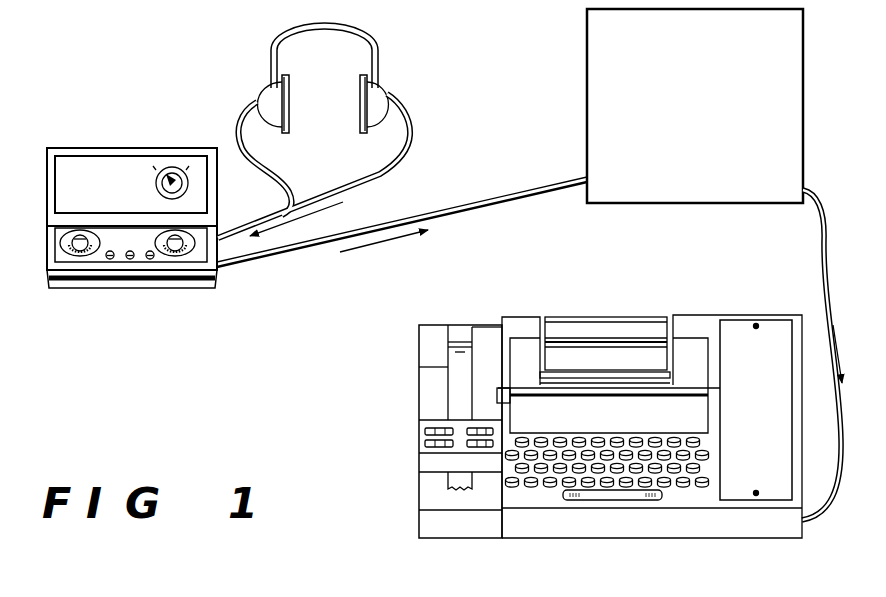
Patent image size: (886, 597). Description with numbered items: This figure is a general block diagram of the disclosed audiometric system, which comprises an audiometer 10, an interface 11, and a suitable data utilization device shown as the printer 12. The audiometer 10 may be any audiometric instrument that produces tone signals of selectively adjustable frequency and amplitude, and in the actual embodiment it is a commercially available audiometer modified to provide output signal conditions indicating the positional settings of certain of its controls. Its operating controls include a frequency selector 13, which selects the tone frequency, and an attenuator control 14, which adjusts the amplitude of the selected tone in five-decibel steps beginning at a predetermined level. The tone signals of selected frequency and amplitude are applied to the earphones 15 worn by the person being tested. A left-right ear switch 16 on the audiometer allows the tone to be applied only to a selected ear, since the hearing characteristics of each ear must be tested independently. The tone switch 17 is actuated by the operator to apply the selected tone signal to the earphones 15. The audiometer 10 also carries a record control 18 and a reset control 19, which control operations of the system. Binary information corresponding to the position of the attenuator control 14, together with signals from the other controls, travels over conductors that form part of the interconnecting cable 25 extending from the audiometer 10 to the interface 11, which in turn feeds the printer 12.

The audiometer 10 is at (82, 112).
The interface 11 is at (705, 205).
The printer 12 is at (517, 313).
The frequency selector 13 is at (182, 253).
The attenuator control 14 is at (67, 238).
The earphones 15 is at (268, 88).
The left-right ear switch 16 is at (172, 168).
The tone switch 17 is at (130, 260).
The record control 18 is at (109, 260).
The reset control 19 is at (151, 260).
The interconnecting cable 25 is at (278, 256).